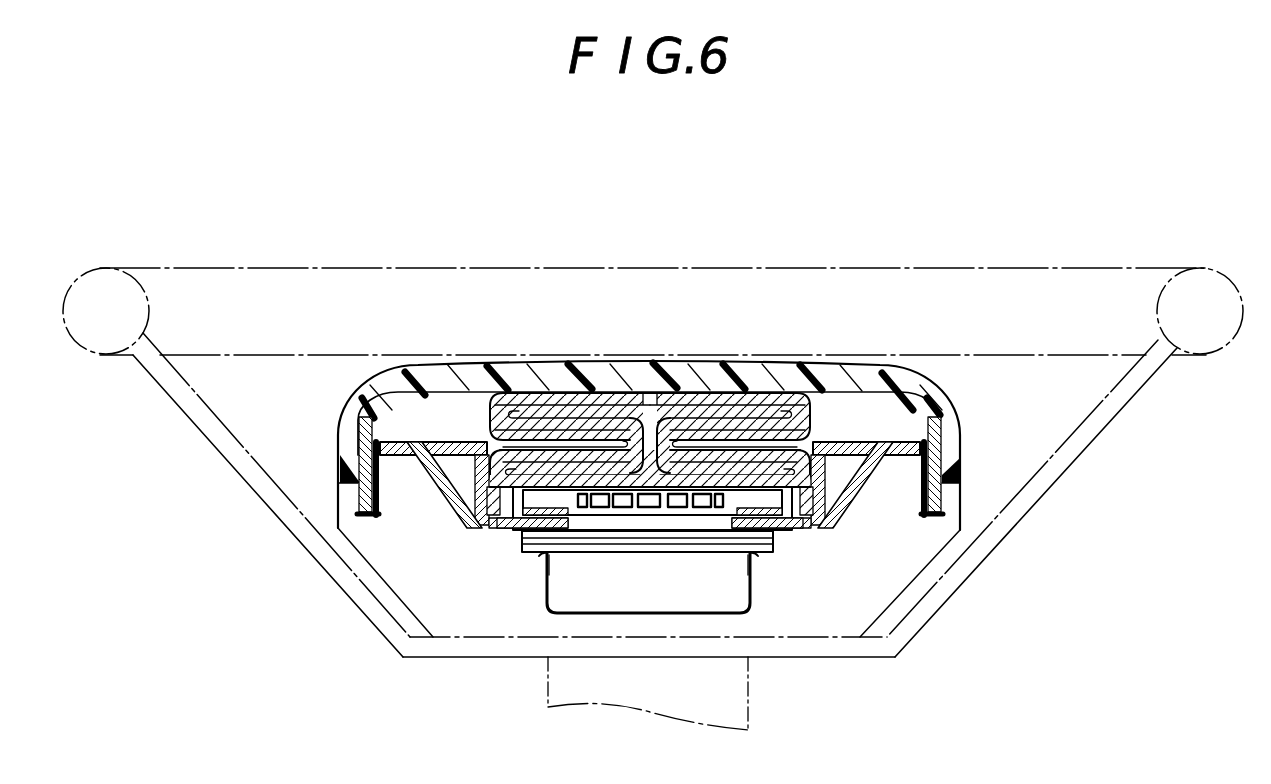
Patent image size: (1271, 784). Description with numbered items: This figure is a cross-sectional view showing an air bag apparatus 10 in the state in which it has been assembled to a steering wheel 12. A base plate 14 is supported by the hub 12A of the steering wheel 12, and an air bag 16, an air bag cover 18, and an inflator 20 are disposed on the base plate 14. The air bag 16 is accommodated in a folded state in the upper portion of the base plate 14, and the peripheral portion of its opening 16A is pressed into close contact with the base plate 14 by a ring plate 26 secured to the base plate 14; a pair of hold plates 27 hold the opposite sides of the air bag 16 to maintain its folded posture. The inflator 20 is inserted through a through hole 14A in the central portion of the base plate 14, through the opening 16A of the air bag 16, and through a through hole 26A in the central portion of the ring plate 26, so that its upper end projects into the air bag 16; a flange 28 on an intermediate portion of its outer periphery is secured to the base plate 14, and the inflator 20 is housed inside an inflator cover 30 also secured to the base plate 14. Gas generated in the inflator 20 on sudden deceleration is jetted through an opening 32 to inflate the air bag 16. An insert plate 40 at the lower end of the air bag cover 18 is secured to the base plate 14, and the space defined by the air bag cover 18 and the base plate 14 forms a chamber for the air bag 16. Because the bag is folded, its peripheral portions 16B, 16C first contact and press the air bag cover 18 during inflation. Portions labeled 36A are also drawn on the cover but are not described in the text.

The air bag apparatus 10 is at (788, 250).
The steering wheel 12 is at (1006, 262).
The hub 12A is at (838, 662).
The base plate 14 is at (428, 492).
The through hole 14A is at (548, 560).
The air bag 16 is at (650, 456).
The opening 16A is at (724, 505).
The peripheral portion 16B is at (583, 392).
The peripheral portion 16C is at (753, 392).
The air bag cover 18 is at (816, 374).
The inflator 20 is at (640, 505).
The ring plate 26 is at (493, 532).
The through hole 26A is at (590, 512).
The hold plates 27 is at (358, 398).
The flange 28 is at (752, 598).
The inflator cover 30 is at (752, 570).
The opening 32 is at (630, 505).
The tear line 36A is at (468, 390).
The insert plate 40 is at (365, 497).